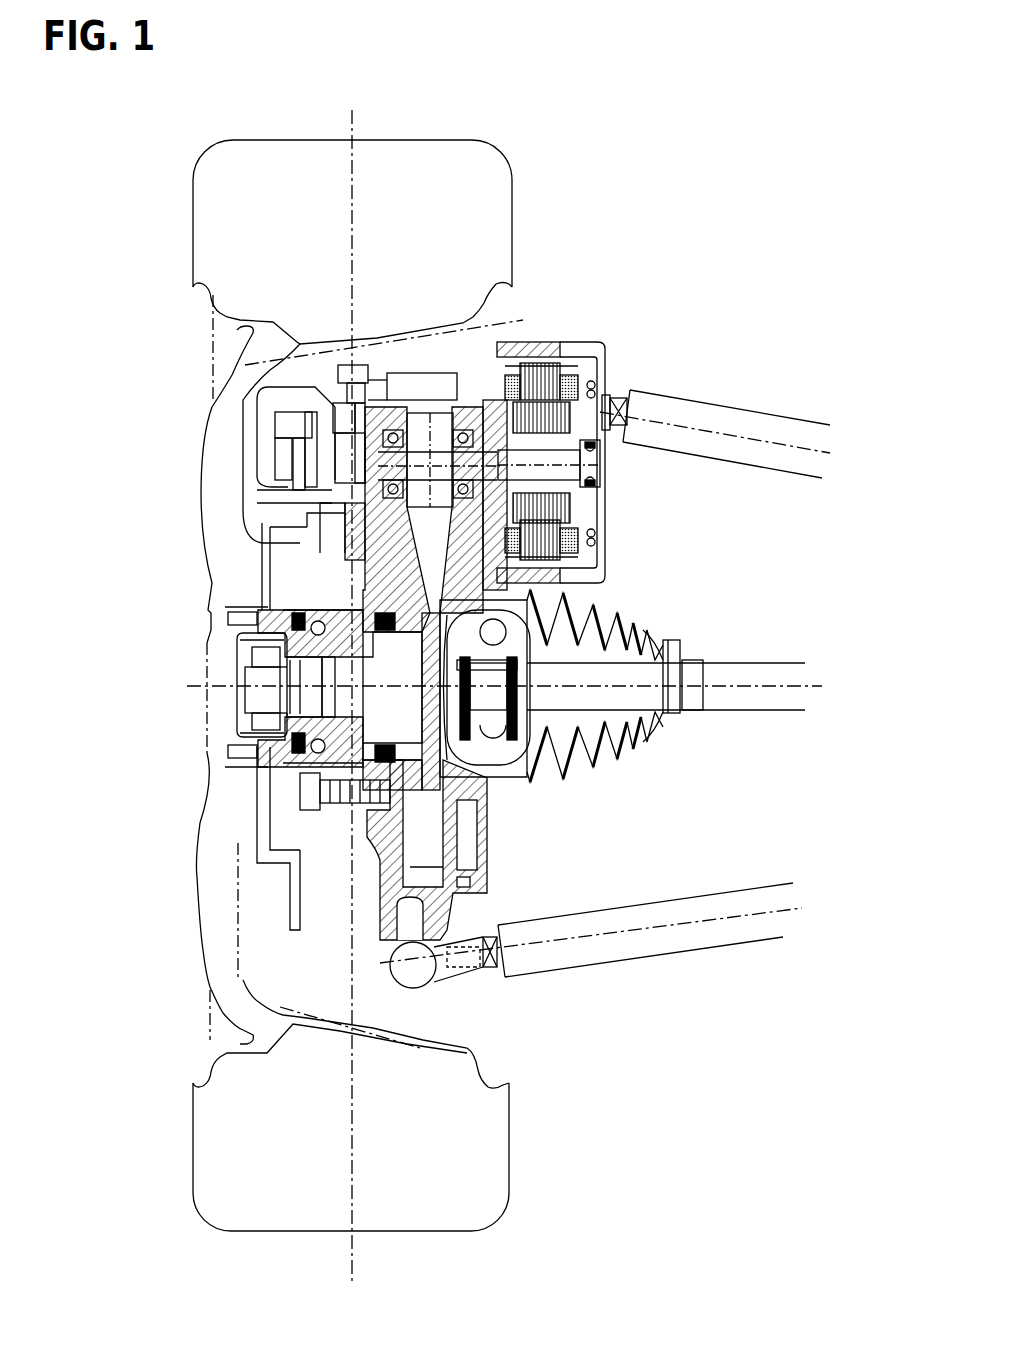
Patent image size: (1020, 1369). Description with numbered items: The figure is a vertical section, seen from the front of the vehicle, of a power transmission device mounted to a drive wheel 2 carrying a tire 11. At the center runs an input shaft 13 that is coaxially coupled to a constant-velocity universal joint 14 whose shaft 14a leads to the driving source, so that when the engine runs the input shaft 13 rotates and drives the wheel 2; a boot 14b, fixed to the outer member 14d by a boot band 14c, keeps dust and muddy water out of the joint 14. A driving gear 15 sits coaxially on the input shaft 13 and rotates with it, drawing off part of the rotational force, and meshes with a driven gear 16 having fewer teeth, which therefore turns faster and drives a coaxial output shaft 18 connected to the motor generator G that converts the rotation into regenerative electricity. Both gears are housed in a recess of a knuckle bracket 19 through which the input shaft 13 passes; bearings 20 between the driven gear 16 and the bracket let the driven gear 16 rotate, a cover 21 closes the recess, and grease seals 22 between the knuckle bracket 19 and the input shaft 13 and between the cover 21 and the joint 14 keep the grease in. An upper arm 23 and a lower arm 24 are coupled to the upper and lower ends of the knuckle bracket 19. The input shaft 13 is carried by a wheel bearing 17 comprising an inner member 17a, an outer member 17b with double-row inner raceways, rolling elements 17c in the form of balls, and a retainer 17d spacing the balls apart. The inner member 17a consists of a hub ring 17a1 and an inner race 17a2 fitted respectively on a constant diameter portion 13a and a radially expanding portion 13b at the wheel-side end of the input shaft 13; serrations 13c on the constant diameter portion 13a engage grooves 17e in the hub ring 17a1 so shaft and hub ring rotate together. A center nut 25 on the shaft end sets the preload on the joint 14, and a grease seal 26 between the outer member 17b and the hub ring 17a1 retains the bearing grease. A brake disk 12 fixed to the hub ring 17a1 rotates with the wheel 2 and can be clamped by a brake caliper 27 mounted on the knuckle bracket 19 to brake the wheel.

The drive wheel 2 is at (205, 378).
The tire 11 is at (472, 195).
The brake disk 12 is at (260, 540).
The input shaft 13 is at (355, 778).
The constant diameter portion 13a is at (273, 750).
The radially expanding portion 13b is at (285, 795).
The serrations 13c is at (257, 714).
The constant-velocity universal joint 14 is at (603, 597).
The shaft 14a is at (633, 673).
The boot 14b is at (620, 610).
The boot band 14c is at (510, 777).
The outer member 14d is at (480, 757).
The driving gear 15 is at (580, 545).
The driven gear 16 is at (570, 523).
The wheel bearing 17 is at (308, 590).
The inner member 17a is at (128, 652).
The hub ring 17a1 is at (273, 632).
The inner race 17a2 is at (267, 713).
The outer member 17b is at (257, 603).
The rolling elements 17c is at (300, 790).
The retainer 17d is at (352, 650).
The grooves 17e is at (345, 735).
The output shaft 18 is at (600, 488).
The knuckle bracket 19 is at (373, 393).
The bearings 20 is at (480, 395).
The cover 21 is at (485, 860).
The grease seals 22 is at (380, 895).
The upper arm 23 is at (688, 405).
The lower arm 24 is at (583, 953).
The center nut 25 is at (263, 750).
The grease seal 26 is at (327, 593).
The brake caliper 27 is at (317, 390).
The motor generator G is at (530, 362).